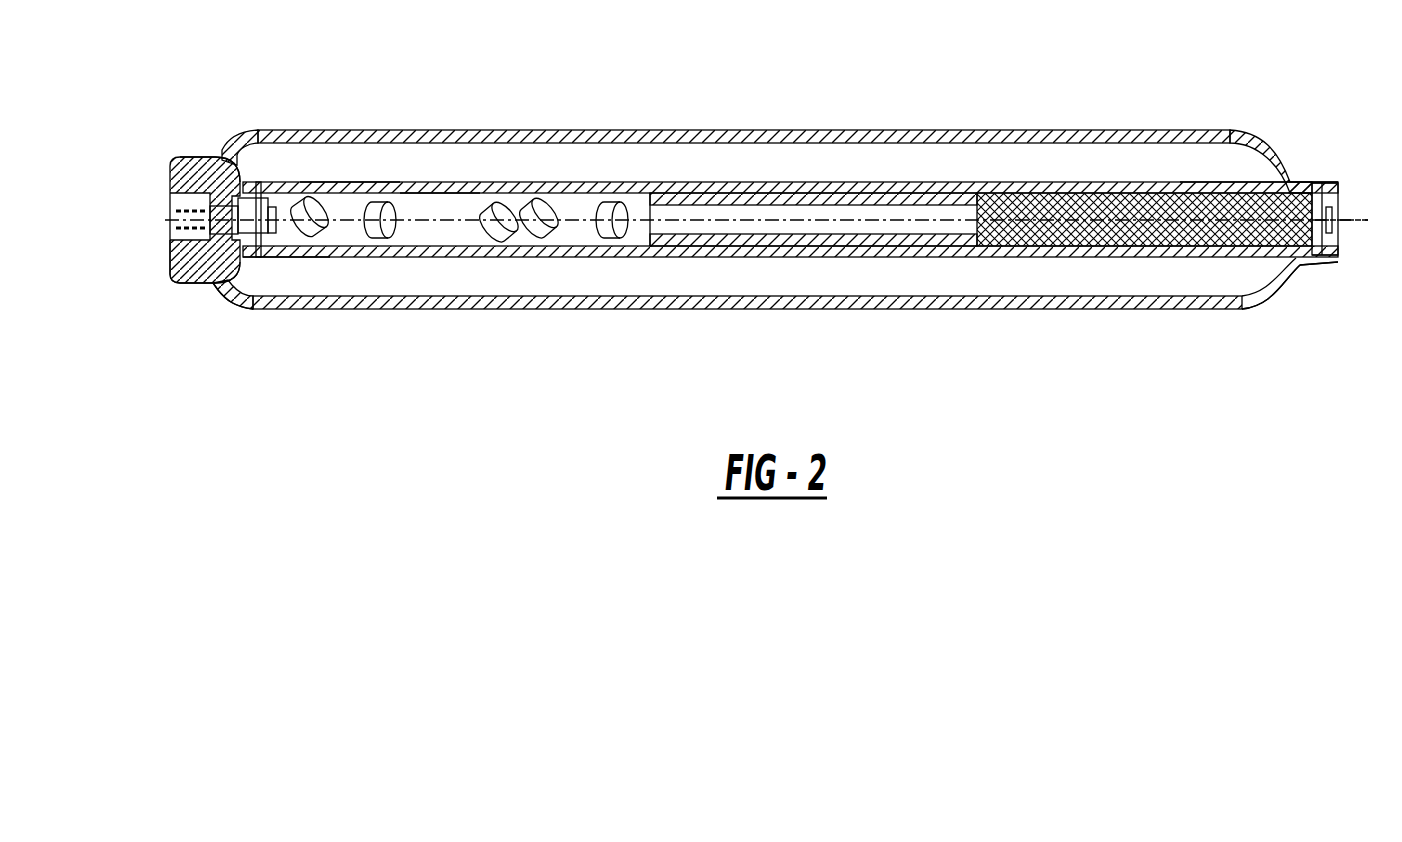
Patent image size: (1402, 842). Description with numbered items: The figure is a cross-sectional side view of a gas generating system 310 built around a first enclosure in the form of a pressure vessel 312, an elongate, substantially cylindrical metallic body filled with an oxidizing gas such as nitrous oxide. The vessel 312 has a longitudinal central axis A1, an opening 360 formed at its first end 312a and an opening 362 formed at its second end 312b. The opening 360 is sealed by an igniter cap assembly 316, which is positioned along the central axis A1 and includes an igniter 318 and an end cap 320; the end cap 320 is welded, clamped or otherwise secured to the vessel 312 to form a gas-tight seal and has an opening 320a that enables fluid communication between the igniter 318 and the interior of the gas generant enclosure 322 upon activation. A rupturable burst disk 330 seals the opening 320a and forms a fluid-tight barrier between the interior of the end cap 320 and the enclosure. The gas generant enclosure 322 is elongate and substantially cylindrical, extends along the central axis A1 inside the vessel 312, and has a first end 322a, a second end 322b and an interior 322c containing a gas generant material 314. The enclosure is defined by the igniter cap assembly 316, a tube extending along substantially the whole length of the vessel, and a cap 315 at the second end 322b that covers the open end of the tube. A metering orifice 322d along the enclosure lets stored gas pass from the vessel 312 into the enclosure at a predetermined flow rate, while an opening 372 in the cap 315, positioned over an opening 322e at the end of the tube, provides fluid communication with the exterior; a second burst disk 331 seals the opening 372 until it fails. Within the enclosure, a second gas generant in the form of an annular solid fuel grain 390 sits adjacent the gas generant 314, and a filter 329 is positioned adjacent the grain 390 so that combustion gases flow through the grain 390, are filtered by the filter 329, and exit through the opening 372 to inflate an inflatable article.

The gas generating system 310 is at (491, 461).
The pressure vessel 312 is at (482, 308).
The first end of vessel 312a is at (238, 296).
The second end of vessel 312b is at (1247, 312).
The gas generant material 314 is at (621, 238).
The cap 315 is at (1325, 263).
The igniter cap assembly 316 is at (172, 158).
The igniter 318 is at (168, 252).
The end cap 320 is at (196, 285).
The opening in end cap 320a is at (278, 193).
The gas generant enclosure 322 is at (768, 258).
The first end of enclosure 322a is at (303, 260).
The second end of enclosure 322b is at (1225, 185).
The interior of enclosure 322c is at (430, 204).
The orifice 322d is at (355, 185).
The opening at end of tube 322e is at (1339, 185).
The filter 329 is at (1170, 196).
The burst disk 330 is at (276, 222).
The burst disk 331 is at (1340, 211).
The opening 360 is at (193, 156).
The opening 362 is at (1325, 183).
The opening 372 is at (1322, 251).
The solid fuel grain 390 is at (770, 196).
The longitudinal central axis A1 is at (1368, 222).